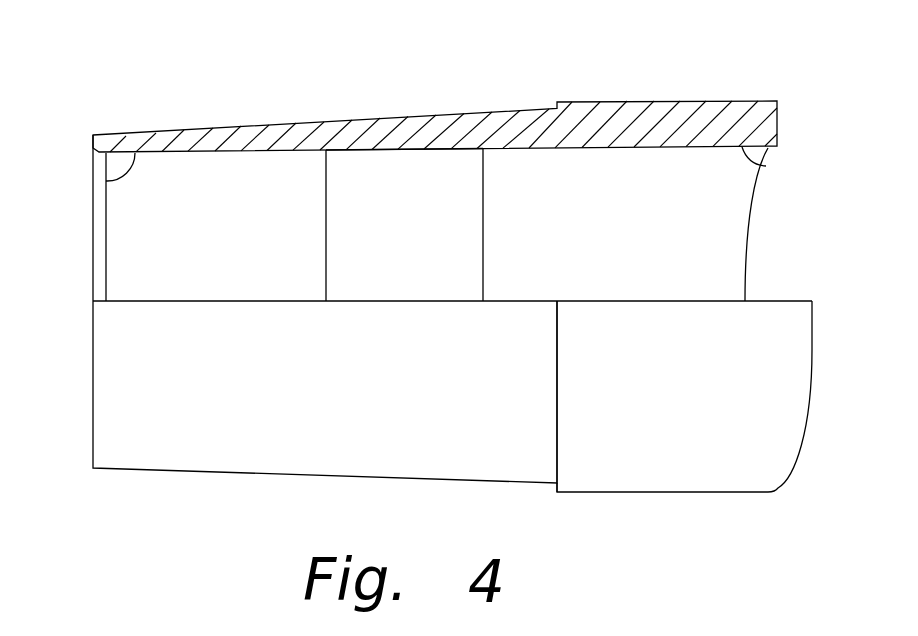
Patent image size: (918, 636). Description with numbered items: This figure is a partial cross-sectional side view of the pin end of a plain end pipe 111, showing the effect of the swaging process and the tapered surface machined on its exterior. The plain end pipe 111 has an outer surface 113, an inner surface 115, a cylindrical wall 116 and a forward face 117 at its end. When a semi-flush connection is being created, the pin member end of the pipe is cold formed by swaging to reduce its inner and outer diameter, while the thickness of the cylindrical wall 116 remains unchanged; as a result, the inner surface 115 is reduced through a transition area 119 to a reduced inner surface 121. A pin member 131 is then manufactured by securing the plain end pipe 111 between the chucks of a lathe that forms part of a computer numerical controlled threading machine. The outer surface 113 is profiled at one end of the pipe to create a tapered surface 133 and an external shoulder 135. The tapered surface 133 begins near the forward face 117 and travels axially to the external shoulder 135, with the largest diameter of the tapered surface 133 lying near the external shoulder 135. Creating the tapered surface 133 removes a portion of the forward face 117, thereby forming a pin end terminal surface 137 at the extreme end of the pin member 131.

The pin member 131 is at (182, 70).
The cylindrical wall 116 is at (690, 110).
The transition area 119 is at (392, 153).
The pin end terminal surface 137 is at (93, 143).
The reduced inner surface 121 is at (107, 181).
The inner surface 115 is at (766, 166).
The forward face 117 is at (93, 282).
The tapered surface 133 is at (226, 474).
The plain end pipe 111 is at (808, 413).
The outer surface 113 is at (768, 463).
The external shoulder 135 is at (557, 491).